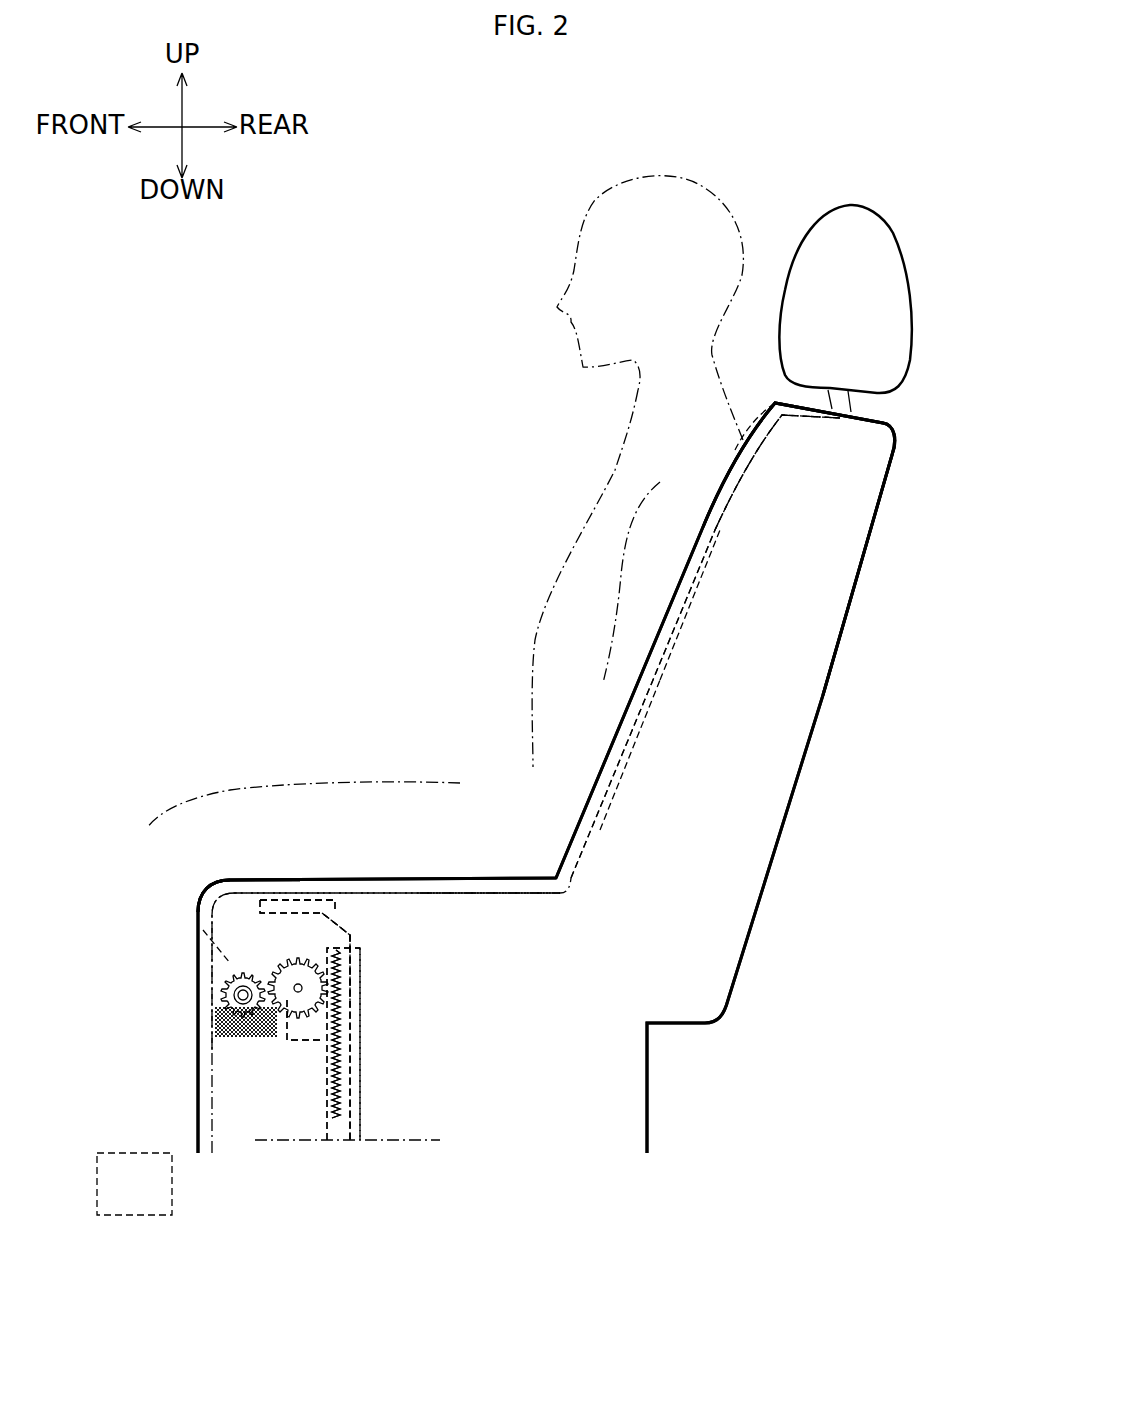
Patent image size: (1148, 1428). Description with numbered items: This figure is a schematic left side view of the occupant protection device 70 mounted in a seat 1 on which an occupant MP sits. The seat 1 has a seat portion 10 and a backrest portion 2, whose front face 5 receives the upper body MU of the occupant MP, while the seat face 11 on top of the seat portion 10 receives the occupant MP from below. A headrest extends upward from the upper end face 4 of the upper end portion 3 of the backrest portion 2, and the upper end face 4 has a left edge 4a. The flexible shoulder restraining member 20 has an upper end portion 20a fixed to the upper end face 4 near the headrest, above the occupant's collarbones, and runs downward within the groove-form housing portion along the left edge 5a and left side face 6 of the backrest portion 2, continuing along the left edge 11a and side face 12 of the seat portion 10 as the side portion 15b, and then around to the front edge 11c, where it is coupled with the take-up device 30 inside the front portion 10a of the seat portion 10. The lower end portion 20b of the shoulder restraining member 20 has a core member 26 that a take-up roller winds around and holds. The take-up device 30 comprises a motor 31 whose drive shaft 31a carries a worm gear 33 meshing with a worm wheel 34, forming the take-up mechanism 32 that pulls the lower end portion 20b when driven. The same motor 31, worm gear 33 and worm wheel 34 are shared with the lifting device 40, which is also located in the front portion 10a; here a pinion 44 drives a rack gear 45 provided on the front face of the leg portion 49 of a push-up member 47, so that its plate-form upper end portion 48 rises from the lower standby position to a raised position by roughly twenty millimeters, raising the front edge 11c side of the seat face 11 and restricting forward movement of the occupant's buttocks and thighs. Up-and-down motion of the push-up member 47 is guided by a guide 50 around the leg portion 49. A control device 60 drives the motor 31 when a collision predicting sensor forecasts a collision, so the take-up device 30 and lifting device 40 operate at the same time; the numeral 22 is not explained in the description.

The occupant MP is at (543, 228).
The upper body MU is at (551, 502).
The seat 1 is at (881, 916).
The backrest portion 2 is at (742, 850).
The seat portion 10 is at (567, 1043).
The upper end portion 3 is at (863, 470).
The upper end face 4 is at (865, 300).
The left edge 4a is at (858, 408).
The front face 5 is at (637, 648).
The left edge 5a is at (697, 560).
The left side face 6 is at (823, 553).
The shoulder restraining member 20 is at (677, 612).
The upper end portion 20a is at (847, 420).
The lower end portion 20b is at (157, 954).
The core member 26 is at (197, 993).
The upper frame (left, right) 22 is at (772, 385).
The side portion 15b is at (632, 750).
The seat face 11 is at (485, 862).
The left edge 11a is at (420, 895).
The front edge 11c is at (192, 878).
The front portion 10a is at (223, 817).
The side face 12 is at (505, 968).
The take-up device 30 is at (190, 1035).
The motor 31 is at (312, 1045).
The drive shaft 31a is at (278, 1042).
The take-up mechanism 32 is at (253, 1081).
The worm gear 33 is at (231, 1040).
The worm wheel 34 is at (205, 985).
The lifting device 40 is at (368, 937).
The pinion 44 is at (270, 890).
The rack gear 45 is at (337, 1050).
The push-up member 47 is at (307, 898).
The upper end portion 48 is at (323, 890).
The leg portion 49 is at (345, 950).
The guide 50 is at (363, 1085).
The control device 60 is at (133, 1185).
The occupant protection device 70 is at (262, 1153).